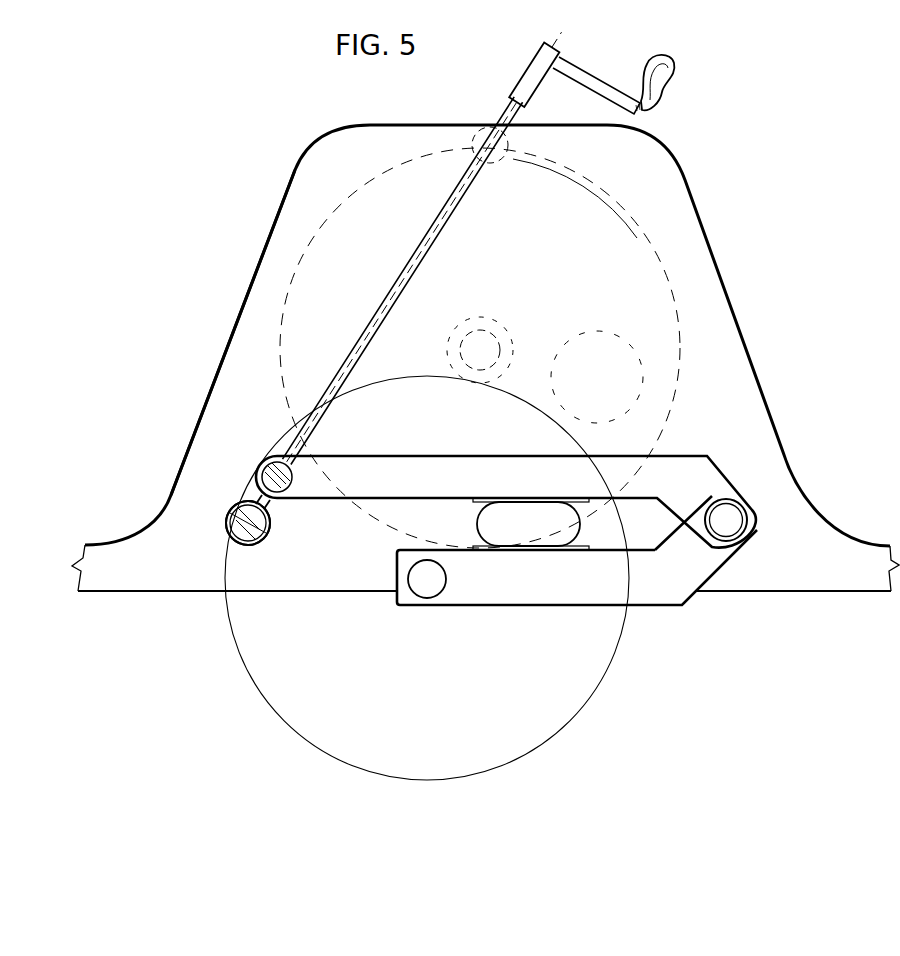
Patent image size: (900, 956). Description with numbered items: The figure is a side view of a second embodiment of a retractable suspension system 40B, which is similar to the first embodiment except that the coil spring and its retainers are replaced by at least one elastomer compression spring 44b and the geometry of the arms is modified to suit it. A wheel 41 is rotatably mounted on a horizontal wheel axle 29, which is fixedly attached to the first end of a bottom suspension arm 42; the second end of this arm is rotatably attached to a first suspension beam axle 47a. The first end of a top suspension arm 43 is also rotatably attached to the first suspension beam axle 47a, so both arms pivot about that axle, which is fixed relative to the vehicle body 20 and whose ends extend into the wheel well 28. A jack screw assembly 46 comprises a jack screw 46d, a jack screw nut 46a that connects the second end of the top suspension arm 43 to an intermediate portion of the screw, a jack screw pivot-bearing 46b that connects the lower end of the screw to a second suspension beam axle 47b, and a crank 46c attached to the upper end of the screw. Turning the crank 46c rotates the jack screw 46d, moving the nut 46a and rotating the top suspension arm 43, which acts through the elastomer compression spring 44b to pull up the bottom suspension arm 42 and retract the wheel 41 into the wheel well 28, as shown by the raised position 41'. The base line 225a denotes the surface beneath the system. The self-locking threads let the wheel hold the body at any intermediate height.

The retractable suspension system 40B is at (214, 331).
The wheel well 28 is at (206, 404).
The vehicle body 20 is at (836, 541).
The base plate 225a is at (120, 580).
The wheel 41 is at (419, 578).
The retracted wheel position 41' is at (480, 348).
The top suspension arm 43 is at (468, 468).
The bottom suspension arm 42 is at (574, 600).
The first suspension beam axle 47a is at (735, 518).
The wheel axle 29 is at (425, 600).
The elastomer compression spring 44b is at (498, 525).
The jack screw nut 46a is at (275, 456).
The jack screw pivot-bearing 46b is at (271, 524).
The second suspension beam axle 47b is at (243, 545).
The jack screw assembly 46 is at (426, 249).
The jack screw 46d is at (470, 193).
The crank 46c is at (675, 70).